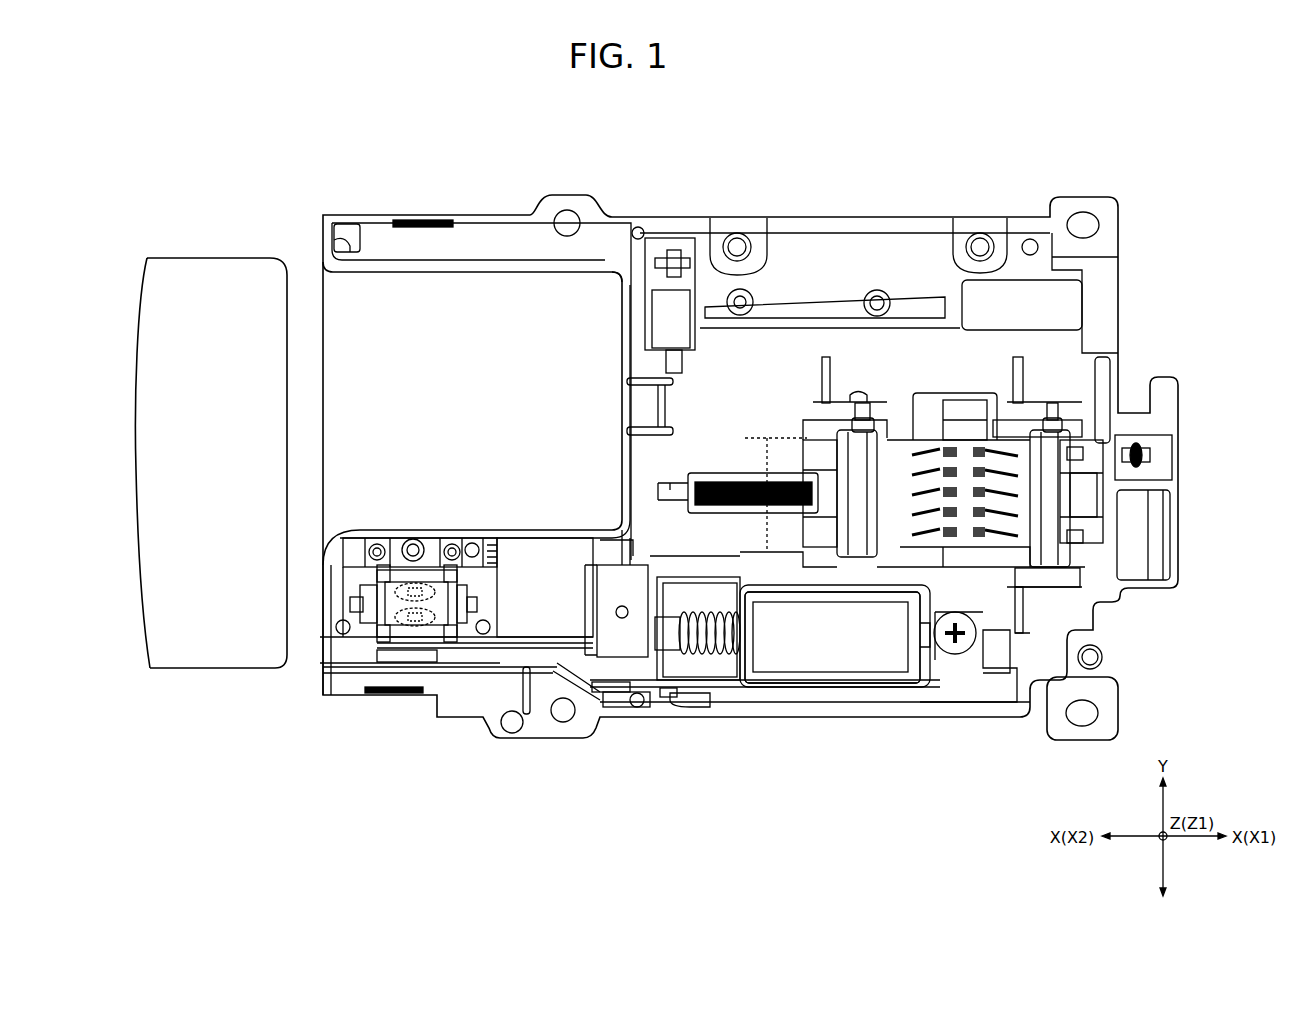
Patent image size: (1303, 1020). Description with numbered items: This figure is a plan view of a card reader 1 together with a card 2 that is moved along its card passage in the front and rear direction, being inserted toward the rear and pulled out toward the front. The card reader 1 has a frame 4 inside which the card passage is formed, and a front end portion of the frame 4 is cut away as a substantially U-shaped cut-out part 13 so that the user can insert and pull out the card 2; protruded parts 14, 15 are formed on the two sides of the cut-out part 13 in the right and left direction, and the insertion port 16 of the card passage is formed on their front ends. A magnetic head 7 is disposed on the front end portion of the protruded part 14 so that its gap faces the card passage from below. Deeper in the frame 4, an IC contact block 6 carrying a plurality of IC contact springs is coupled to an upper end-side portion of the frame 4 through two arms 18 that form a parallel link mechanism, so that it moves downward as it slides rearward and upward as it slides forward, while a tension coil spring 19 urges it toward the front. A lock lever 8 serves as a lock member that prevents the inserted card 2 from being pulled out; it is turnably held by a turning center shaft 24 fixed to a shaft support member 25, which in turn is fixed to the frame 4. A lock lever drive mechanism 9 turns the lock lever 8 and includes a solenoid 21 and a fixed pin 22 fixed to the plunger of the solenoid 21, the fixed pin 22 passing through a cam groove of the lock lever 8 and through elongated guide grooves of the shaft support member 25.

The card reader 1 is at (1146, 181).
The card 2 is at (237, 258).
The frame 4 is at (856, 218).
The IC contact block 6 is at (932, 430).
The magnetic head 7 is at (404, 545).
The lock lever 8 is at (475, 662).
The lock lever drive mechanism 9 is at (833, 675).
The cut-out part 13 is at (466, 403).
The protruded part 14 is at (529, 530).
The protruded part 15 is at (480, 274).
The insertion port 16 is at (328, 243).
The arm 18 is at (862, 422).
The tension coil spring 19 is at (723, 476).
The solenoid 21 is at (832, 637).
The fixed pin 22 is at (667, 700).
The turning center shaft 24 is at (611, 680).
The shaft support member 25 is at (723, 690).